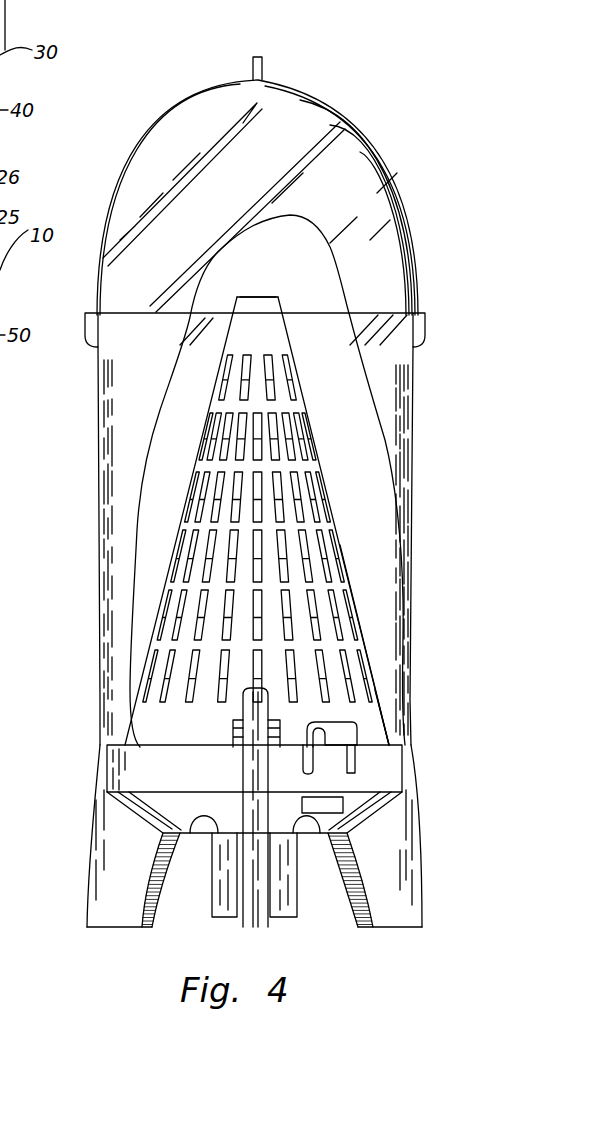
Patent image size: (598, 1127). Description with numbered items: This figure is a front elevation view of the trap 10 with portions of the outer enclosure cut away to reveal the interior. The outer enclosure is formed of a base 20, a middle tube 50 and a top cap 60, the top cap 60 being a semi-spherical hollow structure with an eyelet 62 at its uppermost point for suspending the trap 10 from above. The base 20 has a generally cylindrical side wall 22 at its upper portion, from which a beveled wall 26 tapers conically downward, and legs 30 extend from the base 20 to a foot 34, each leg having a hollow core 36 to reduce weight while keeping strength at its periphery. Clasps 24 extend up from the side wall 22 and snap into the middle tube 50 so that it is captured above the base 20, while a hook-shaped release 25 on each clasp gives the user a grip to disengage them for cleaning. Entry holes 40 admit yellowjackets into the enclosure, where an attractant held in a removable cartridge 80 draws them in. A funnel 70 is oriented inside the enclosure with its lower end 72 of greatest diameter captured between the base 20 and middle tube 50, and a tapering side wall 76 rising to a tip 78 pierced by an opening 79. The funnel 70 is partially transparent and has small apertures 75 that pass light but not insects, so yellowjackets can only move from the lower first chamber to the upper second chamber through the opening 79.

The trap 10 is at (346, 85).
The base 20 is at (79, 777).
The side wall 22 is at (120, 762).
The clasps 24 is at (327, 760).
The release 25 is at (343, 730).
The beveled wall 26 is at (143, 805).
The legs 30 is at (405, 865).
The foot 34 is at (397, 927).
The core 36 is at (360, 893).
The entry holes 40 is at (208, 833).
The middle tube 50 is at (410, 475).
The top cap 60 is at (375, 148).
The eyelet 62 is at (253, 58).
The funnel 70 is at (333, 587).
The lower end 72 is at (370, 710).
The apertures 75 is at (270, 372).
The tapering side wall 76 is at (367, 653).
The tip 78 is at (236, 305).
The opening 79 is at (275, 297).
The cartridge 80 is at (278, 902).